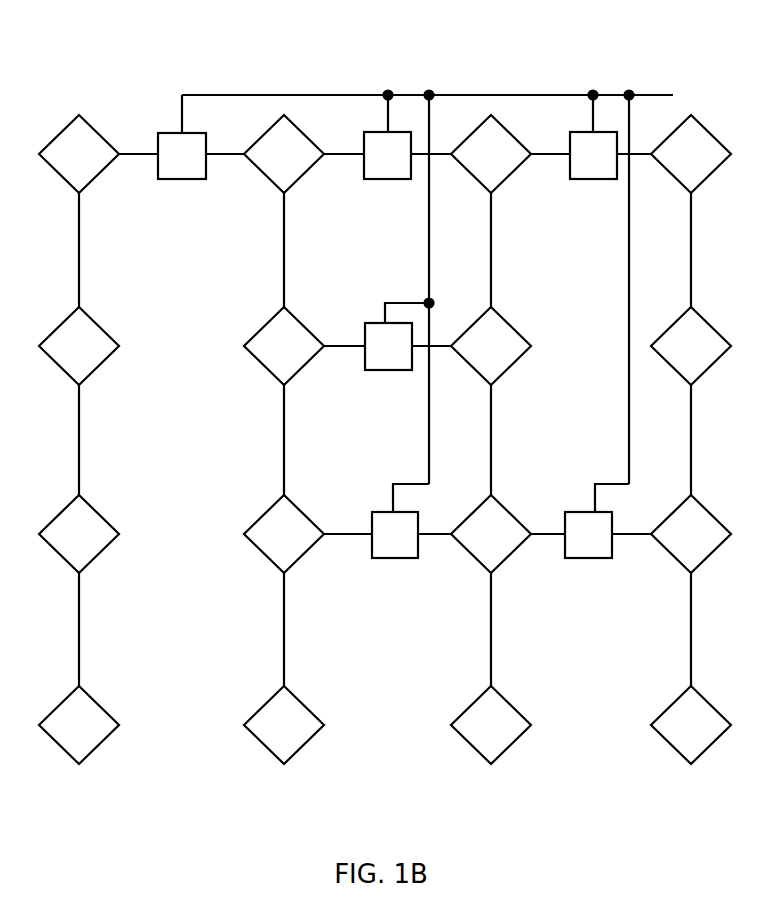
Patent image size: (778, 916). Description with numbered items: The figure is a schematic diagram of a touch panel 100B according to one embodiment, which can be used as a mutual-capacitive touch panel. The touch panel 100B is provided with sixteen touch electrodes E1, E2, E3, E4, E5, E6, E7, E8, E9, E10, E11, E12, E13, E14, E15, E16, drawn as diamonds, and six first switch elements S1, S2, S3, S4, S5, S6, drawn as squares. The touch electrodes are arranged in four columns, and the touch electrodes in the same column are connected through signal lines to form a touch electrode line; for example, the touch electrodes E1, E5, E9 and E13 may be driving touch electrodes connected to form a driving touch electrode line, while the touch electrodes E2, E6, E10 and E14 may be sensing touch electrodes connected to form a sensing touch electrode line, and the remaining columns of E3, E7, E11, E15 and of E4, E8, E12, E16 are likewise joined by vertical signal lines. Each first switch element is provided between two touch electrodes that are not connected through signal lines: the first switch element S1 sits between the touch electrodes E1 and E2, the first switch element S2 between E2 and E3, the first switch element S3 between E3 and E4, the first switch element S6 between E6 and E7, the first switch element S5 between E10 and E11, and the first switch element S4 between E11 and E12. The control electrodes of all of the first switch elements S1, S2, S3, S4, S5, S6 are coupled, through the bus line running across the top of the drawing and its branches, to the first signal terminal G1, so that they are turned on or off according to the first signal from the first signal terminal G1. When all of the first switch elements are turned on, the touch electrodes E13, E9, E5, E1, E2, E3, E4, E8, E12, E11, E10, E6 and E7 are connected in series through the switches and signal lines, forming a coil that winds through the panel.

The touch panel 100B is at (132, 84).
The first signal terminal G1 is at (445, 297).
The touch electrode E1 is at (79, 154).
The touch electrode E2 is at (284, 154).
The touch electrode E3 is at (491, 154).
The touch electrode E4 is at (691, 154).
The touch electrode E5 is at (79, 346).
The touch electrode E6 is at (284, 346).
The touch electrode E7 is at (491, 346).
The touch electrode E8 is at (691, 346).
The touch electrode E9 is at (79, 534).
The touch electrode E10 is at (284, 534).
The touch electrode E11 is at (491, 534).
The touch electrode E12 is at (691, 534).
The touch electrode E13 is at (79, 725).
The touch electrode E14 is at (284, 725).
The touch electrode E15 is at (491, 725).
The touch electrode E16 is at (691, 725).
The first switch element S1 is at (182, 156).
The first switch element S2 is at (387, 155).
The first switch element S3 is at (593, 155).
The first switch element S4 is at (588, 535).
The first switch element S5 is at (395, 535).
The first switch element S6 is at (388, 346).